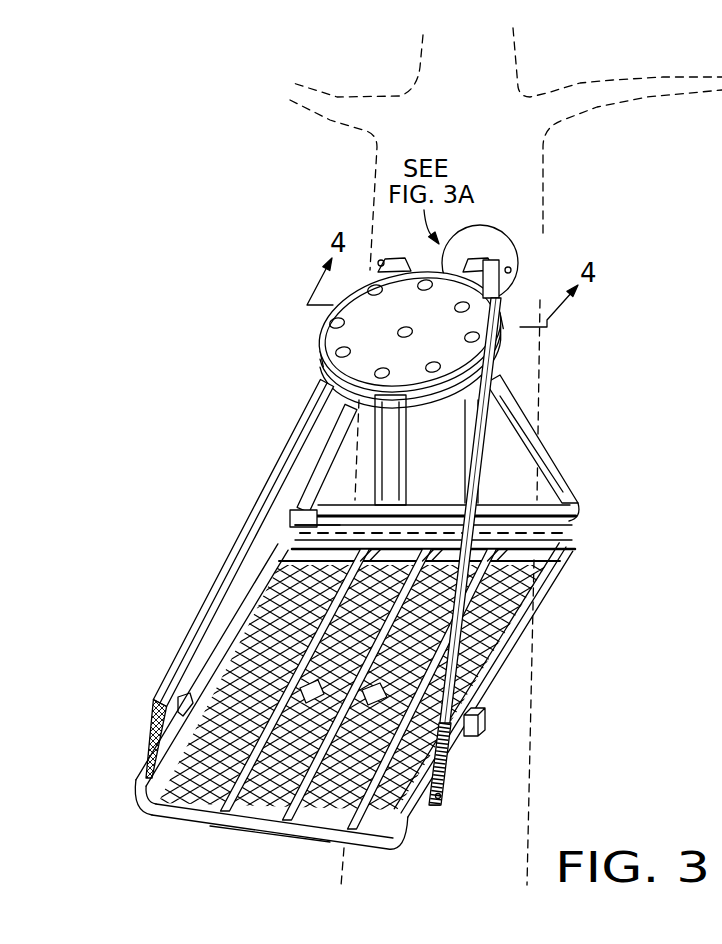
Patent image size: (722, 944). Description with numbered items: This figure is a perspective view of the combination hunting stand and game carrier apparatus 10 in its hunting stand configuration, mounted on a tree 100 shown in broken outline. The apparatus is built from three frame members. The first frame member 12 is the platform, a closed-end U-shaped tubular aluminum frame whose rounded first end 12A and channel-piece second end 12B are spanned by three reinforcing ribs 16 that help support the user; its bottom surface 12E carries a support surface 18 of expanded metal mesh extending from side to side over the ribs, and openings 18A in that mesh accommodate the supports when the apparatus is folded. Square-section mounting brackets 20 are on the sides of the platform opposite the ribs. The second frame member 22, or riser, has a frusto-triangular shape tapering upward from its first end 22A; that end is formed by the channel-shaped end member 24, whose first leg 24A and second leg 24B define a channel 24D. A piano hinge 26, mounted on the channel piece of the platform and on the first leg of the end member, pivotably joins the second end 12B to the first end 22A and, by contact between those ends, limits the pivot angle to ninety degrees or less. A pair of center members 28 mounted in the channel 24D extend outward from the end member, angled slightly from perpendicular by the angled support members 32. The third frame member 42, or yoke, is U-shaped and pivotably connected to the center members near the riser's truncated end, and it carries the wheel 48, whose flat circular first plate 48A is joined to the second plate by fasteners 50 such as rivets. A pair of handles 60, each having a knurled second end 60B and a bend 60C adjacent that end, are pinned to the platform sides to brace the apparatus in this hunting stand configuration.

The combination hunting stand and game carrier apparatus 10 is at (208, 401).
The first frame member 12 is at (343, 710).
The first end 12A is at (223, 836).
The second end 12B is at (574, 545).
The bottom surface 12E is at (143, 812).
The reinforcing ribs 16 is at (527, 574).
The support surface 18 is at (499, 655).
The openings 18A is at (413, 804).
The mounting brackets 20 is at (486, 713).
The second frame member 22 is at (560, 471).
The first end 22A is at (576, 500).
The end member 24 is at (347, 520).
The first leg 24A is at (317, 503).
The second leg 24B is at (325, 520).
The channel 24D is at (290, 513).
The hinge 26 is at (573, 531).
The center members 28 is at (388, 472).
The support members 32 is at (536, 438).
The third frame member 42 is at (358, 410).
The wheel 48 is at (333, 338).
The first plate 48A is at (480, 356).
The fasteners 50 is at (476, 337).
The handles 60 is at (200, 615).
The second end 60B is at (153, 758).
The bend 60C is at (158, 703).
The tree 100 is at (520, 145).